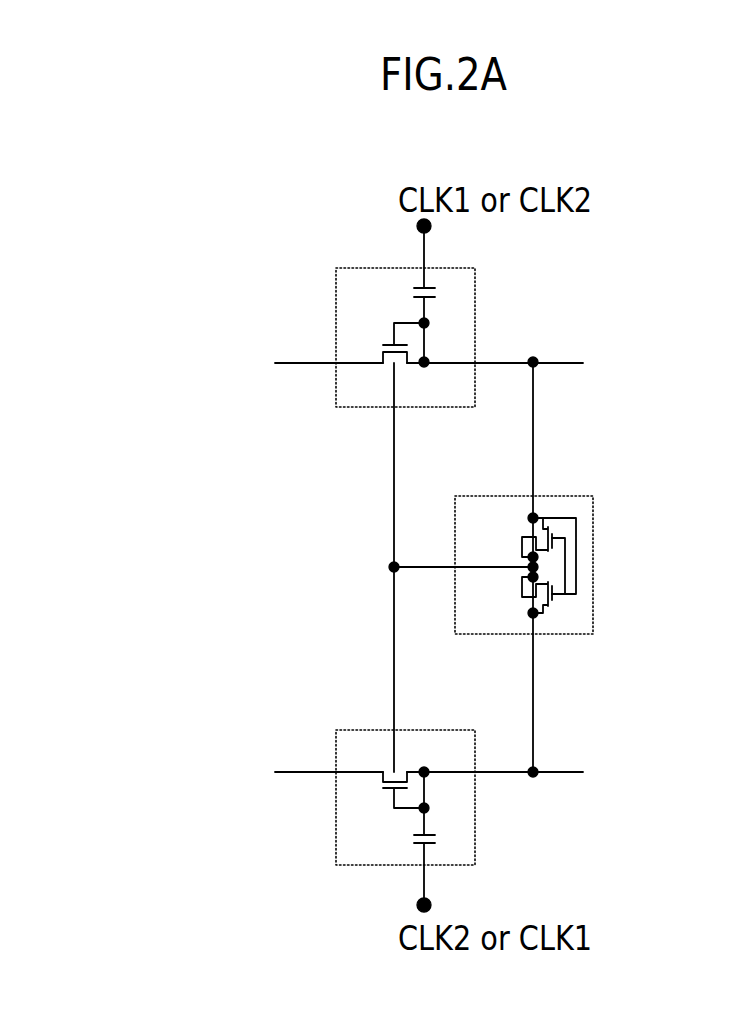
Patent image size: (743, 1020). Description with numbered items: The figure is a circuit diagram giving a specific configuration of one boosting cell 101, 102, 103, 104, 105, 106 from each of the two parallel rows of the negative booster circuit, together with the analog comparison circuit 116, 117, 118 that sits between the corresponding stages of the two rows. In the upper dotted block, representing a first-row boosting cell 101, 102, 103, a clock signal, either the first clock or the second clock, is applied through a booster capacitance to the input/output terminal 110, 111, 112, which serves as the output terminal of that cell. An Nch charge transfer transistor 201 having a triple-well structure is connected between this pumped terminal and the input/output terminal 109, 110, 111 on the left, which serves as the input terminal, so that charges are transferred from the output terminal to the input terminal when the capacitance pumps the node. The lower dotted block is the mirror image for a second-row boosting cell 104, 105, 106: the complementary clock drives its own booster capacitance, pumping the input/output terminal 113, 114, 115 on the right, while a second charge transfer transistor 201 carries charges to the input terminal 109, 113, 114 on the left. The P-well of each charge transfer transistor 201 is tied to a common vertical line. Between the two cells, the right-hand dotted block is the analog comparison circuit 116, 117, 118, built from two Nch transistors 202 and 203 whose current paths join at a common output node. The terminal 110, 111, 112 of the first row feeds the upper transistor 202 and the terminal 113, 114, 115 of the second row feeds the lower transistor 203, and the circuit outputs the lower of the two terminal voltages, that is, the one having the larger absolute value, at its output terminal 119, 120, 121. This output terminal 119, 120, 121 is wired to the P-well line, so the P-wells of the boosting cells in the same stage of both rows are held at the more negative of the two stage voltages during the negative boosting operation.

The boosting cell 101 is at (501, 316).
The boosting cell 102 is at (501, 316).
The boosting cell 103 is at (477, 299).
The boosting cell 104 is at (501, 817).
The boosting cell 105 is at (501, 817).
The boosting cell 106 is at (477, 835).
The input/output terminal 109 is at (273, 567).
The input/output terminal 110 is at (273, 394).
The input/output terminal 111 is at (289, 365).
The input/output terminal 112 is at (570, 365).
The input/output terminal 113 is at (556, 745).
The input/output terminal 114 is at (556, 745).
The input/output terminal 115 is at (570, 769).
The analog comparison circuit 116 is at (580, 538).
The analog comparison circuit 117 is at (580, 538).
The analog comparison circuit 118 is at (580, 538).
The output terminal 119 is at (366, 568).
The output terminal 120 is at (366, 568).
The output terminal 121 is at (390, 567).
The Nch charge transfer transistor 201 is at (385, 344).
The Nch transistor 202 is at (554, 531).
The Nch transistor 203 is at (554, 602).